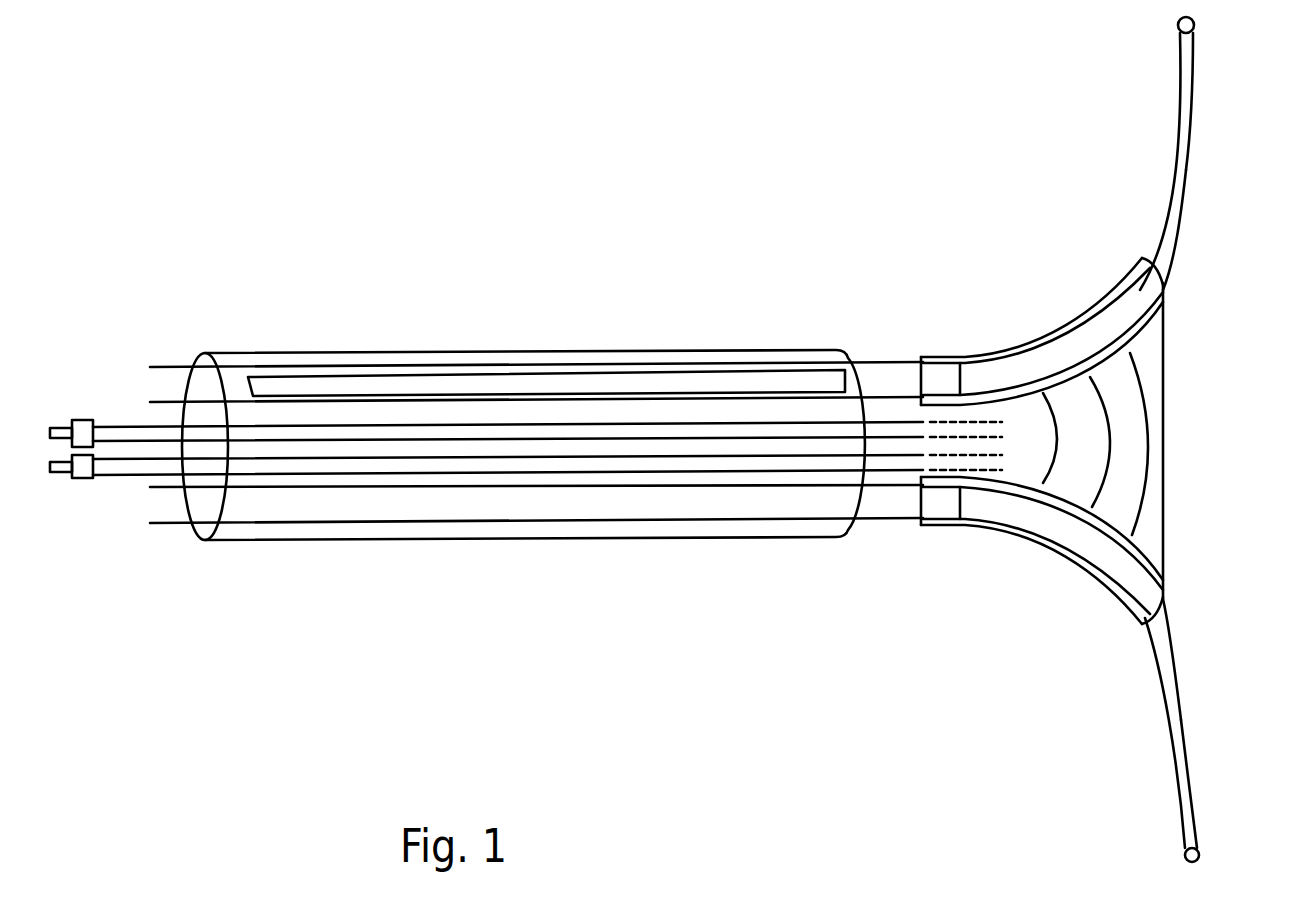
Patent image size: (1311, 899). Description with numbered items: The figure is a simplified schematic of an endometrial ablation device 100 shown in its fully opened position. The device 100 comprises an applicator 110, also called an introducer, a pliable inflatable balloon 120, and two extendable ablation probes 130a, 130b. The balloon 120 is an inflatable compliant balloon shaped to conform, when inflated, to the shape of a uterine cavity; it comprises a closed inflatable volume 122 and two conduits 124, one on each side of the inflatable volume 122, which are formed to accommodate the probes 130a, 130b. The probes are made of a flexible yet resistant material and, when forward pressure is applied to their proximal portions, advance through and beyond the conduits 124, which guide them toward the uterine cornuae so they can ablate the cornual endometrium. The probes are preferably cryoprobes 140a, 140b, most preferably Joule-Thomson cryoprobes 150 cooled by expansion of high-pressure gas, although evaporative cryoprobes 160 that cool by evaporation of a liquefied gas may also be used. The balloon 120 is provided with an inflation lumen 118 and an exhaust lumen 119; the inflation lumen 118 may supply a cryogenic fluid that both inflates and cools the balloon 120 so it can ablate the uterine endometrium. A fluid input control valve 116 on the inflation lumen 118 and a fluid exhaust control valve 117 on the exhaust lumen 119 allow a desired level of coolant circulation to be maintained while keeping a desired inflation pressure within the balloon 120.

The endometrial ablation device 100 is at (895, 358).
The applicator 110 is at (317, 352).
The fluid input control valve 116 is at (83, 430).
The fluid exhaust control valve 117 is at (82, 478).
The inflation lumen 118 is at (405, 432).
The exhaust lumen 119 is at (398, 465).
The pliable inflatable balloon 120 is at (1160, 458).
The closed inflatable volume 122 is at (1090, 407).
The conduits 124 is at (1028, 345).
The extendable ablation probe 130a is at (1100, 337).
The extendable ablation probe 130b is at (1080, 540).
The cryoprobe 140a is at (1175, 143).
The cryoprobe 140b is at (1180, 810).
The Joule-Thomson cryoprobe 150 is at (1187, 143).
The evaporative cryoprobe 160 is at (1177, 203).